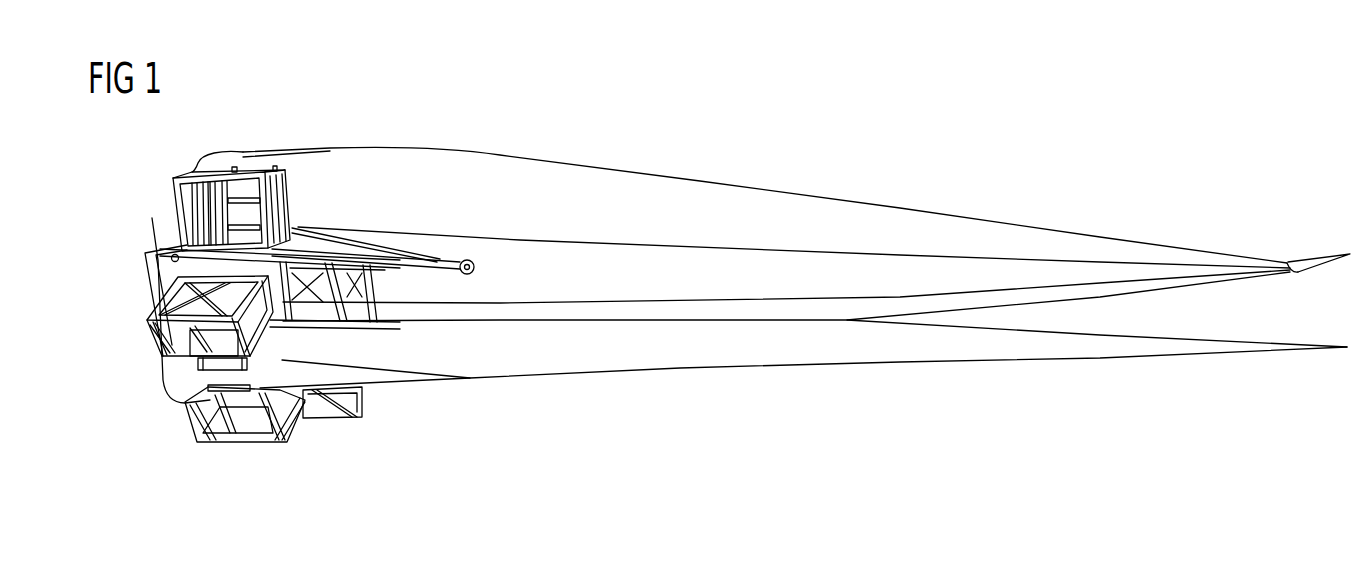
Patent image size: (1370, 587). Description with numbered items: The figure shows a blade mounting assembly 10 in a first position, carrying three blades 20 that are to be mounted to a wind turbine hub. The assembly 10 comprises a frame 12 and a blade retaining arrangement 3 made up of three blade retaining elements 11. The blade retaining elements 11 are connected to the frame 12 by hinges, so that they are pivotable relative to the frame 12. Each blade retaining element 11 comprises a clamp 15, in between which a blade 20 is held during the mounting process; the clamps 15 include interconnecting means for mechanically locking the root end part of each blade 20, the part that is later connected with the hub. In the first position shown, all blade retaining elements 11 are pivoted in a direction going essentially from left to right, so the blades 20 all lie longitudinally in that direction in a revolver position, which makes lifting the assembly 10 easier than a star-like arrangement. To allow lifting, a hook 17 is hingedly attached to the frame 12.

The blade retaining arrangement 3 is at (187, 450).
The blade mounting assembly 10 is at (243, 486).
The blade retaining element 11 is at (178, 192).
The frame 12 is at (170, 262).
The clamp 15 is at (252, 172).
The hook 17 is at (416, 265).
The blade 20 is at (1003, 340).